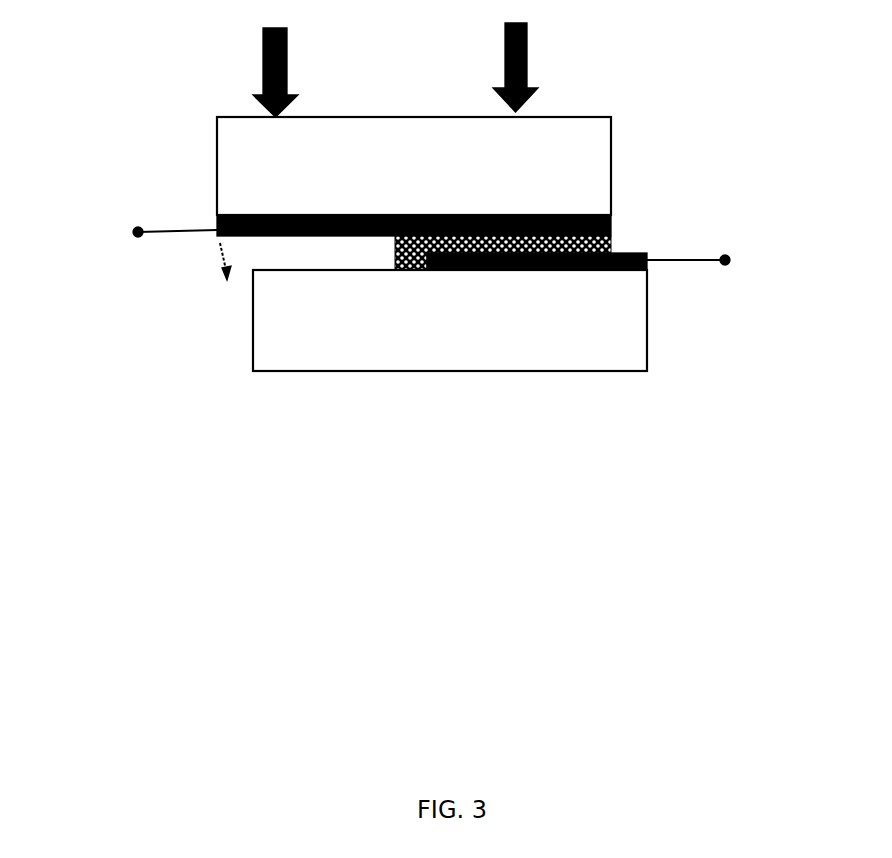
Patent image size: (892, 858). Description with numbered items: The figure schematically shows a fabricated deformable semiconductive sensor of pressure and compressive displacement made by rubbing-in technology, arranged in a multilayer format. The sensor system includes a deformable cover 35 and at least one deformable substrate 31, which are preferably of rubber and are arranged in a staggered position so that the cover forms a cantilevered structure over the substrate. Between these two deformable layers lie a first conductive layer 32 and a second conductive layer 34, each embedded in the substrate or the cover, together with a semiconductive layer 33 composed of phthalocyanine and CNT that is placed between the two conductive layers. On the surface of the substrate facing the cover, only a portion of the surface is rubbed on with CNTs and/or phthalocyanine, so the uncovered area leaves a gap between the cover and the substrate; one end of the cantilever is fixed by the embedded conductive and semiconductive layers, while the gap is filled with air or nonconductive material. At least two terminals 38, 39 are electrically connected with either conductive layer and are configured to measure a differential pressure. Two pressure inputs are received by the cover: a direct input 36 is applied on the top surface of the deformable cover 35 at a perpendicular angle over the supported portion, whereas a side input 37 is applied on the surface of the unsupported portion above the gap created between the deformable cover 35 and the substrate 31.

The deformable substrate 31 is at (398, 348).
The first conductive layer 32 is at (633, 273).
The semiconductive layer 33 is at (398, 270).
The second conductive layer 34 is at (612, 218).
The deformable cover 35 is at (632, 140).
The direct input 36 is at (553, 67).
The side input 37 is at (312, 72).
The terminal 38 is at (150, 242).
The terminal 39 is at (726, 255).